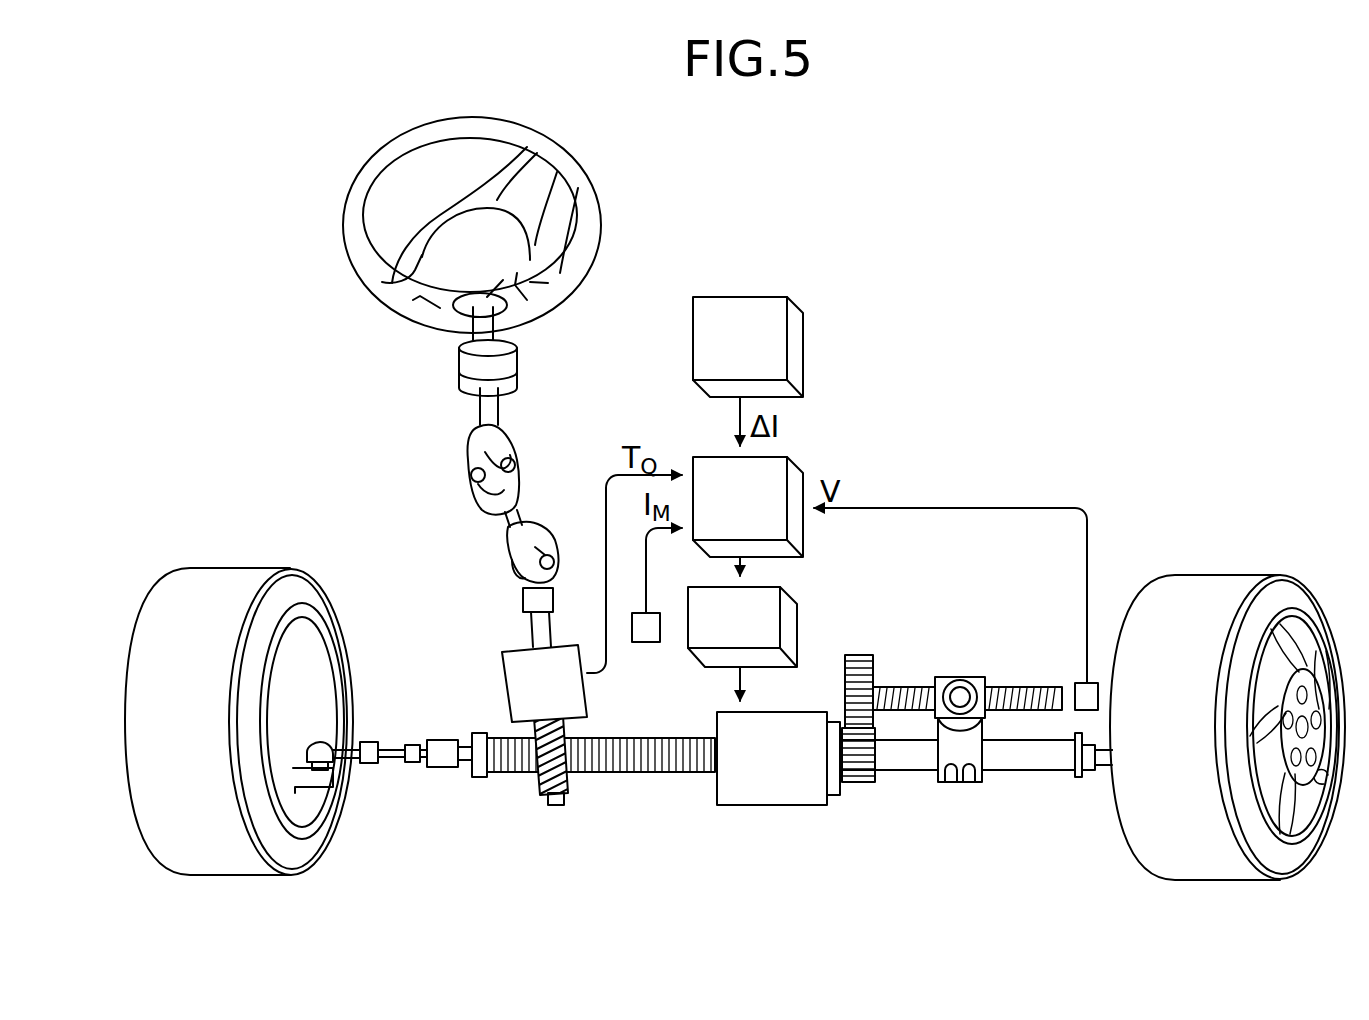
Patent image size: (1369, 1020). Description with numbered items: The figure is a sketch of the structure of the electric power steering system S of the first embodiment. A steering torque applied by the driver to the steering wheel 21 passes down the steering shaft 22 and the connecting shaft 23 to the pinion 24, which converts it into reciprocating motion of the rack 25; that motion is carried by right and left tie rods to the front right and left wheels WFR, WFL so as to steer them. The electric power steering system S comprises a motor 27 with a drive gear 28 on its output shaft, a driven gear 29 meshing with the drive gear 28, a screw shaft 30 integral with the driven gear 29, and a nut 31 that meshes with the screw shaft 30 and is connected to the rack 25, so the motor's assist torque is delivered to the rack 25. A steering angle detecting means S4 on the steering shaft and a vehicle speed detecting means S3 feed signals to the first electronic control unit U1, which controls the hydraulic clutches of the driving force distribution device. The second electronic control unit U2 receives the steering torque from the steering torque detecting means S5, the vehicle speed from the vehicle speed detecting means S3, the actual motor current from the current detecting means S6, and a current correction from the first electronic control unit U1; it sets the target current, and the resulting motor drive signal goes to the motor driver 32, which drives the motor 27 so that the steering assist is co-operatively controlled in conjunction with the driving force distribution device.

The steering wheel 21 is at (588, 197).
The steering angle detecting means S4 is at (472, 361).
The steering shaft 22 is at (483, 405).
The connecting shaft 23 is at (503, 523).
The steering torque detecting means S5 is at (563, 695).
The pinion 24 is at (543, 782).
The rack 25 is at (647, 760).
The motor 27 is at (758, 785).
The drive gear 28 is at (862, 775).
The driven gear 29 is at (857, 667).
The screw shaft 30 is at (1015, 685).
The nut 31 is at (943, 680).
The motor driver 32 is at (742, 627).
The current detecting means S6 is at (647, 632).
The vehicle speed detecting means S3 is at (1098, 697).
The first electronic control unit U1 is at (748, 347).
The second electronic control unit U2 is at (748, 507).
The electric power steering system S is at (962, 484).
The front right wheel WFR is at (228, 578).
The front left wheel WFL is at (1210, 585).